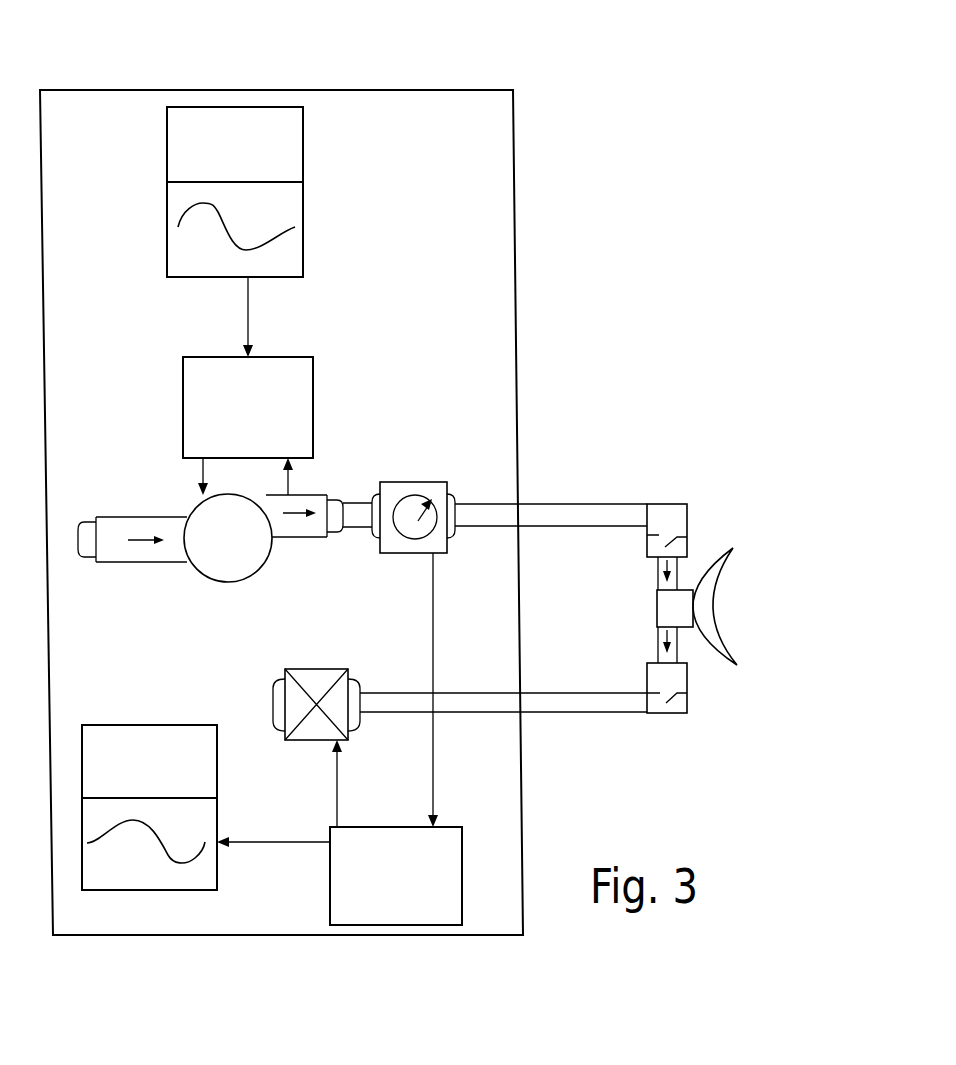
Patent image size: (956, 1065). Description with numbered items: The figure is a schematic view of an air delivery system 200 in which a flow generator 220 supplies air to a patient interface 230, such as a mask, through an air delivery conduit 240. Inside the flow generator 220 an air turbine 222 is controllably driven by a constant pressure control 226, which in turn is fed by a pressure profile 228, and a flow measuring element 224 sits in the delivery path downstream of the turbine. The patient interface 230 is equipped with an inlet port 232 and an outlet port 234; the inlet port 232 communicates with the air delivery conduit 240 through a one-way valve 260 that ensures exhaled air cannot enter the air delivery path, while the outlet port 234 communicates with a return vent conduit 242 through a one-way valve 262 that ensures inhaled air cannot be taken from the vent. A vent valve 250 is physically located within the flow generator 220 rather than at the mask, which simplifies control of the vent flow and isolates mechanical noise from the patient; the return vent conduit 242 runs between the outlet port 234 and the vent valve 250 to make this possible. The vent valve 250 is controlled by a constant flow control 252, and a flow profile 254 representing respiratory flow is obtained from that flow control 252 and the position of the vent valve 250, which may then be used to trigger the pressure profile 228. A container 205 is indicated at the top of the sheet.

The air delivery system 200 is at (604, 122).
The container 205 is at (486, 0).
The air flow generator 220 is at (308, 84).
The air turbine 222 is at (213, 559).
The flow measuring element 224 is at (433, 482).
The constant pressure control 226 is at (313, 407).
The pressure profile 228 is at (304, 143).
The patient interface 230 is at (730, 603).
The inlet port 232 is at (658, 577).
The outlet port 234 is at (658, 641).
The air delivery conduit 240 is at (582, 498).
The return vent conduit 242 is at (578, 706).
The vent valve 250 is at (287, 672).
The constant flow control 252 is at (462, 876).
The flow profile 254 is at (218, 777).
The one-way valve 260 is at (687, 521).
The one-way valve 262 is at (690, 683).